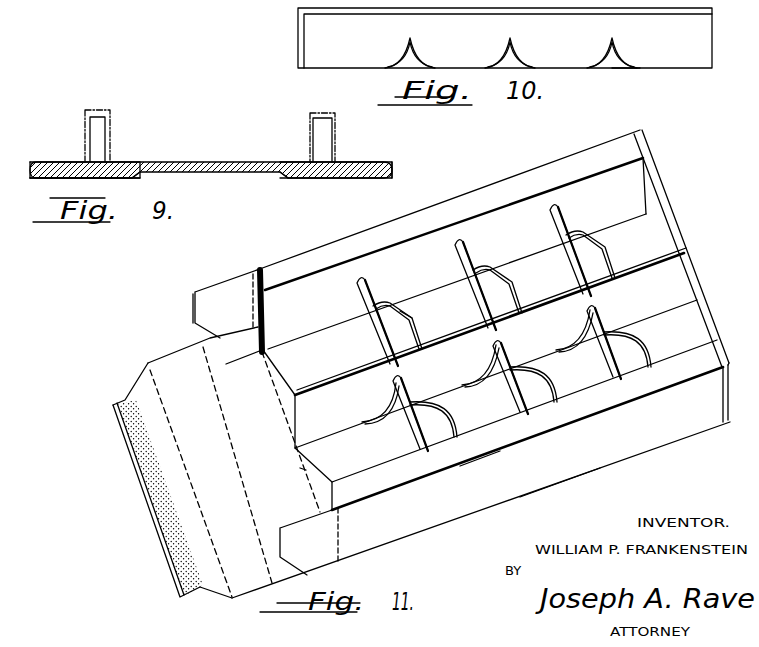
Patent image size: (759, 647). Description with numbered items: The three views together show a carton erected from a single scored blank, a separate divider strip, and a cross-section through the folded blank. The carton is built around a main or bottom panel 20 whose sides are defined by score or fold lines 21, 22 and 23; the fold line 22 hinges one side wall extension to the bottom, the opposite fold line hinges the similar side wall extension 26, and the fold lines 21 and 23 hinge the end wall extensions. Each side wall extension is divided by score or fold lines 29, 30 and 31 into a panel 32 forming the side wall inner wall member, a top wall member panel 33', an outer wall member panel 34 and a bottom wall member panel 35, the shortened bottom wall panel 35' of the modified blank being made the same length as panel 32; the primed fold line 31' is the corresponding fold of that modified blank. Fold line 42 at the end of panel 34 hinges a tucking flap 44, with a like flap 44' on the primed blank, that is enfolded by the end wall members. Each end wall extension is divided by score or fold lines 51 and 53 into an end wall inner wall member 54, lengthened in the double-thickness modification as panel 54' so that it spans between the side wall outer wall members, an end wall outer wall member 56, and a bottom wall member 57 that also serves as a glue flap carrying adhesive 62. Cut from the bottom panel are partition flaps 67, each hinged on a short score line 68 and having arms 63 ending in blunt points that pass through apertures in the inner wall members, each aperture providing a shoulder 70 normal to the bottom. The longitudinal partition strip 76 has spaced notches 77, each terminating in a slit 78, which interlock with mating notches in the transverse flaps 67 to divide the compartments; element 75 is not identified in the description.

In FIG. 9, the main or bottom panel 20 is at (200, 162).
In FIG. 11, the main or bottom panel 20 is at (347, 364).
In FIG. 11, the score or fold line 21 is at (305, 471).
In FIG. 11, the score or fold line 22 is at (432, 294).
In FIG. 11, the score or fold line 23 is at (692, 346).
In FIG. 11, the side wall extension 26 is at (456, 366).
In FIG. 11, the score or fold line 29 is at (382, 263).
In FIG. 9, the score or fold line 30 is at (36, 162).
In FIG. 11, the score or fold line 30 is at (532, 193).
In FIG. 9, the score or fold line 31 is at (216, 153).
In FIG. 11, the score or fold line 31 is at (560, 482).
In FIG. 9, the thickened end portion 31' is at (81, 185).
In FIG. 9, the side wall inner wall member panel 32 is at (100, 150).
In FIG. 11, the side wall inner wall member panel 32 is at (320, 285).
In FIG. 9, the side wall top wall member panel 33' is at (224, 127).
In FIG. 11, the side wall top wall member panel 33' is at (368, 365).
In FIG. 11, the side wall outer wall member panel 34 is at (480, 470).
In FIG. 9, the side wall bottom wall member panel 35 is at (297, 182).
In FIG. 9, the side wall bottom wall member panel 35' is at (136, 182).
In FIG. 11, the score or fold line 42 is at (252, 305).
In FIG. 11, the tucking flap 44 is at (306, 537).
In FIG. 11, the end tab 44' is at (217, 304).
In FIG. 11, the score or fold line 51 is at (672, 220).
In FIG. 11, the score or fold line 53 is at (227, 571).
In FIG. 11, the end wall inner wall member panel 54 is at (647, 204).
In FIG. 11, the end wall inner wall member panel 54' is at (291, 432).
In FIG. 11, the end wall outer wall member panel 56 is at (730, 392).
In FIG. 11, the end wall bottom wall member 57 is at (158, 402).
In FIG. 11, the adhesive 62 is at (170, 526).
In FIG. 11, the arm 63 is at (464, 267).
In FIG. 11, the partition flap 67 is at (474, 300).
In FIG. 11, the score or fold line 68 is at (412, 438).
In FIG. 11, the back face or shoulder 70 is at (550, 245).
In FIG. 11, the curved divider portion 75 is at (455, 425).
In FIG. 10, the longitudinal partition strip 76 is at (713, 26).
In FIG. 10, the notch 77 is at (620, 67).
In FIG. 11, the notch 77 is at (493, 376).
In FIG. 10, the slit or cut 78 is at (615, 47).